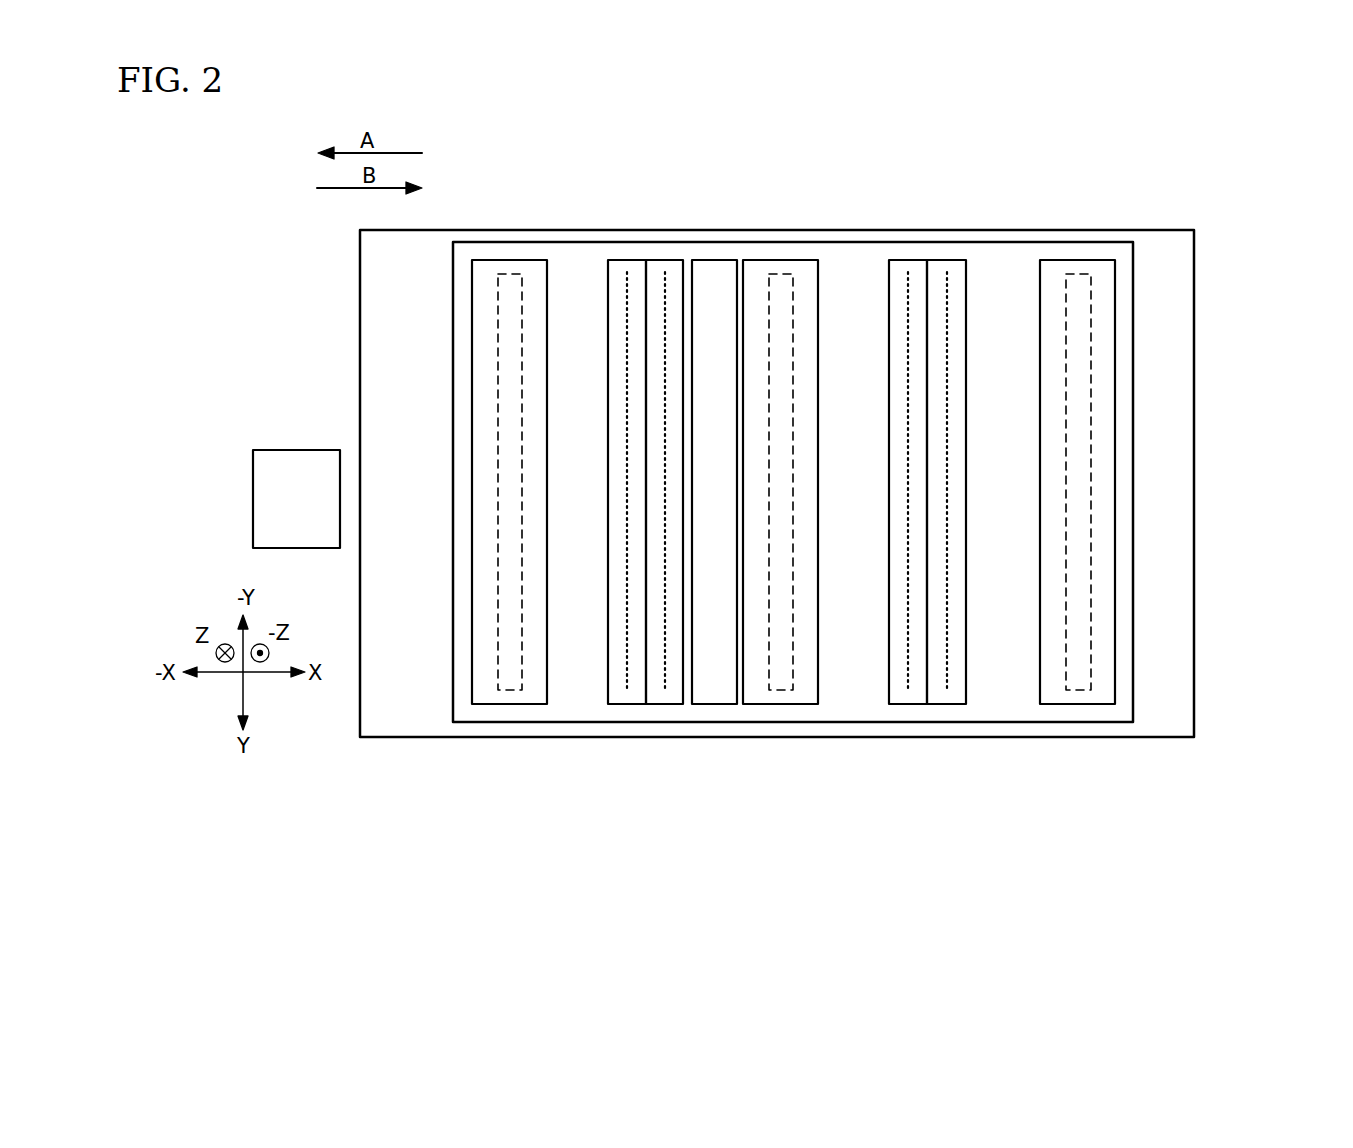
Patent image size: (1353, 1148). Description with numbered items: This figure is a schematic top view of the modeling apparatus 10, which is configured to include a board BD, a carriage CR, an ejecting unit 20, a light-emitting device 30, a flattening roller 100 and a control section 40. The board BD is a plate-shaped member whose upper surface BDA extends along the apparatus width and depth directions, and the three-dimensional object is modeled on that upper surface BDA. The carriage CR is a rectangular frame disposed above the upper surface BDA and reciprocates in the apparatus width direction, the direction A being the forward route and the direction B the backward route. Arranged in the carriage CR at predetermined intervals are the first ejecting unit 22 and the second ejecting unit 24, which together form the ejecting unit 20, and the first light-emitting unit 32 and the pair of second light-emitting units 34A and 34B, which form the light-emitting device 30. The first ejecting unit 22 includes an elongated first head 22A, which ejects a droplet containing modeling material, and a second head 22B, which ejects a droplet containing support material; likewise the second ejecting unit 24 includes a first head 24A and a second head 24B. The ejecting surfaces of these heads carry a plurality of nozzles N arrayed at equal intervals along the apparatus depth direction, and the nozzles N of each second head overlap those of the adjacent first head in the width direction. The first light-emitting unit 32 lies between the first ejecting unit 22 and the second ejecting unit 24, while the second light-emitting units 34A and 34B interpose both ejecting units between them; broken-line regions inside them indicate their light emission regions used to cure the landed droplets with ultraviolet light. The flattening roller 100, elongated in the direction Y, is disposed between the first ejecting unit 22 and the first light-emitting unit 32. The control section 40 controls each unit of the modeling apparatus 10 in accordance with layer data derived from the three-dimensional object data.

The modeling apparatus 10 is at (1222, 182).
The ejecting unit 20 is at (932, 840).
The first ejecting unit 22 is at (688, 786).
The first head 22A is at (627, 705).
The second head 22B is at (663, 705).
The second ejecting unit 24 is at (963, 786).
The first head 24A is at (908, 705).
The second head 24B is at (945, 705).
The light-emitting device 30 is at (1128, 165).
The first light-emitting unit 32 is at (778, 258).
The second light-emitting unit 34A is at (512, 258).
The second light-emitting unit 34B is at (1073, 258).
The control section 40 is at (298, 450).
The flattening roller 100 is at (708, 258).
The nozzles N is at (665, 402).
The carriage CR is at (1085, 722).
The board BD is at (1143, 737).
The upper surface BDA is at (1172, 718).